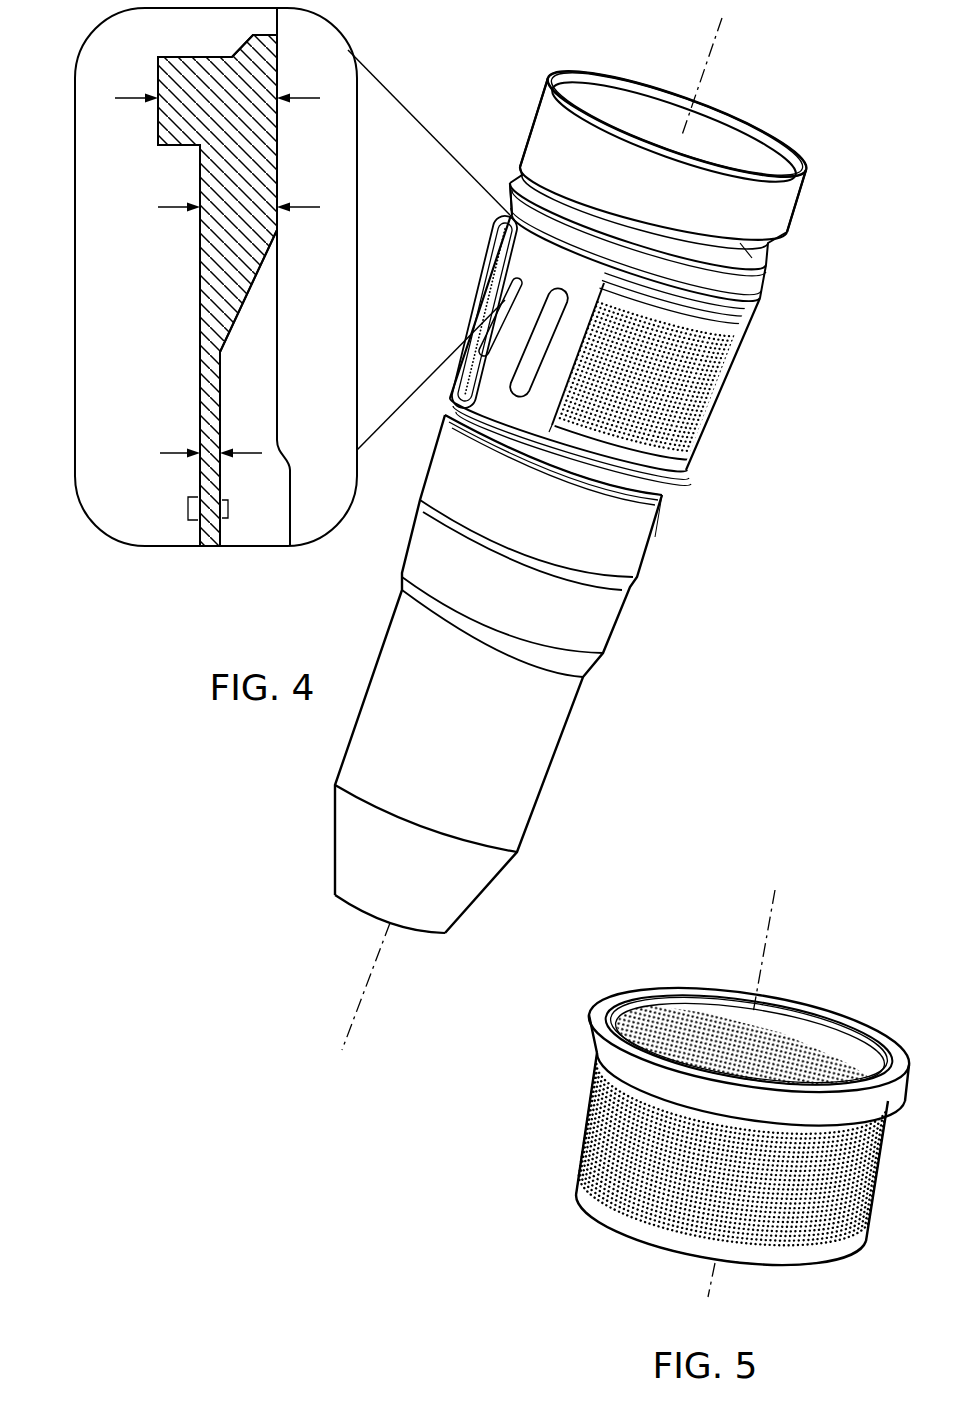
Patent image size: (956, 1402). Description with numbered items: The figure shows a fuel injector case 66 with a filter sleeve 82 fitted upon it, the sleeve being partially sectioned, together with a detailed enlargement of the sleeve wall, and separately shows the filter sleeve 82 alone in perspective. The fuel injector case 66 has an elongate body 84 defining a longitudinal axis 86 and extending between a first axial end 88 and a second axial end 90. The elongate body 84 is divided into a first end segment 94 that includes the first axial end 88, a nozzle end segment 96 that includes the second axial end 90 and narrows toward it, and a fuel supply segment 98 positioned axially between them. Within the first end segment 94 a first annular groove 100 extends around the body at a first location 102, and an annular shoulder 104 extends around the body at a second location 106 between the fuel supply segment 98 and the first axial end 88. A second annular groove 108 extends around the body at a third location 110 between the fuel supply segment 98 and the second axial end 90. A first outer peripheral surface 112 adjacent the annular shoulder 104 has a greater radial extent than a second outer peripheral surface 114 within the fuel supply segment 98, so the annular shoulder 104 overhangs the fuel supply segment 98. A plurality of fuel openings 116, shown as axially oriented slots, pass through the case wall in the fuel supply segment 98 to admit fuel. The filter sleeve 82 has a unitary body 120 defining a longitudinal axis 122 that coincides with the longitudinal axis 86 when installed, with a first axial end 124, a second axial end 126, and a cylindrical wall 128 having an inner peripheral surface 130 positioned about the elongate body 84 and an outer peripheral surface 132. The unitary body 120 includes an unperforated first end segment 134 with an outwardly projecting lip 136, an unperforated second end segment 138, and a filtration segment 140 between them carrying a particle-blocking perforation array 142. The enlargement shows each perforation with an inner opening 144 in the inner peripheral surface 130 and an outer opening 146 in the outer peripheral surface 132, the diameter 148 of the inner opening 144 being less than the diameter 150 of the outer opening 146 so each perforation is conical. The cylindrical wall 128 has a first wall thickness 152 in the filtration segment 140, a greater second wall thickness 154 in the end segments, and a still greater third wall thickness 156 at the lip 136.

In FIG. 4, the fuel injector case 66 is at (797, 210).
In FIG. 4, the filter sleeve 82 is at (628, 465).
In FIG. 5, the filter sleeve 82 is at (873, 1213).
In FIG. 4, the elongate body 84 is at (777, 237).
In FIG. 4, the longitudinal axis 86 is at (709, 57).
In FIG. 4, the first axial end 88 is at (557, 72).
In FIG. 4, the second axial end 90 is at (343, 903).
In FIG. 4, the first end segment 94 is at (828, 182).
In FIG. 4, the nozzle end segment 96 is at (560, 836).
In FIG. 4, the fuel supply segment 98 is at (502, 348).
In FIG. 4, the first annular groove 100 is at (765, 267).
In FIG. 4, the first location 102 is at (508, 160).
In FIG. 4, the annular shoulder 104 is at (759, 288).
In FIG. 4, the second location 106 is at (505, 215).
In FIG. 4, the second annular groove 108 is at (660, 492).
In FIG. 4, the third location 110 is at (677, 490).
In FIG. 4, the first outer peripheral surface 112 is at (752, 258).
In FIG. 4, the second outer peripheral surface 114 is at (540, 392).
In FIG. 4, the fuel openings 116 is at (540, 290).
In FIG. 4, the unitary body 120 is at (200, 300).
In FIG. 5, the unitary body 120 is at (866, 1165).
In FIG. 5, the longitudinal axis 122 is at (775, 912).
In FIG. 4, the first axial end 124 is at (255, 33).
In FIG. 5, the first axial end 124 is at (885, 1036).
In FIG. 4, the second axial end 126 is at (578, 455).
In FIG. 5, the second axial end 126 is at (805, 1265).
In FIG. 4, the cylindrical wall 128 is at (277, 243).
In FIG. 4, the inner peripheral surface 130 is at (220, 360).
In FIG. 5, the inner peripheral surface 130 is at (670, 1000).
In FIG. 4, the outer peripheral surface 132 is at (200, 362).
In FIG. 5, the outer peripheral surface 132 is at (623, 1222).
In FIG. 4, the first end segment 134 is at (145, 242).
In FIG. 5, the first end segment 134 is at (598, 1012).
In FIG. 4, the outwardly projecting lip 136 is at (158, 122).
In FIG. 5, the outwardly projecting lip 136 is at (590, 1033).
In FIG. 4, the second end segment 138 is at (692, 465).
In FIG. 5, the second end segment 138 is at (572, 1215).
In FIG. 4, the filtration segment 140 is at (718, 403).
In FIG. 5, the filtration segment 140 is at (575, 1127).
In FIG. 4, the perforation array 142 is at (687, 433).
In FIG. 5, the perforation array 142 is at (598, 1173).
In FIG. 4, the inner opening 144 is at (226, 431).
In FIG. 4, the outer opening 146 is at (195, 431).
In FIG. 4, the diameter 148 is at (228, 505).
In FIG. 4, the diameter 150 is at (186, 505).
In FIG. 4, the first wall thickness 152 is at (262, 453).
In FIG. 4, the second wall thickness 154 is at (312, 207).
In FIG. 4, the third wall thickness 156 is at (312, 98).